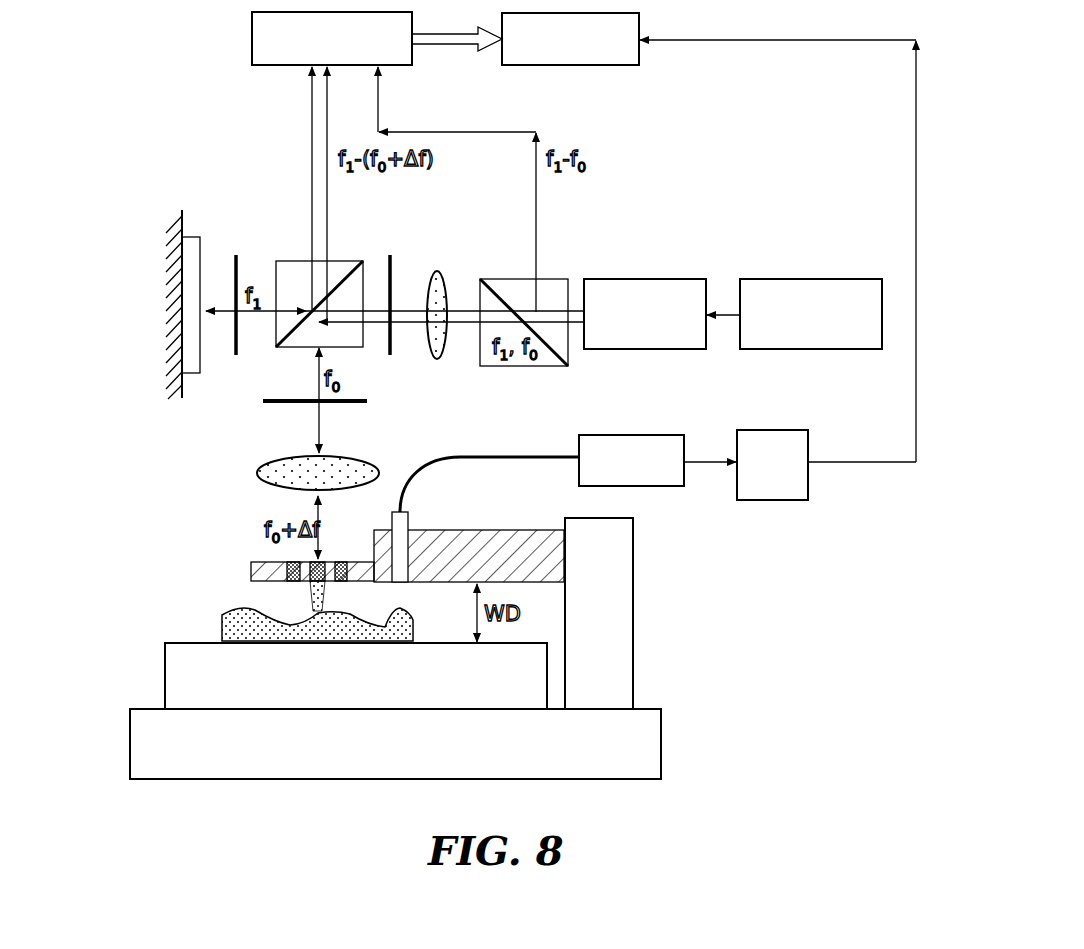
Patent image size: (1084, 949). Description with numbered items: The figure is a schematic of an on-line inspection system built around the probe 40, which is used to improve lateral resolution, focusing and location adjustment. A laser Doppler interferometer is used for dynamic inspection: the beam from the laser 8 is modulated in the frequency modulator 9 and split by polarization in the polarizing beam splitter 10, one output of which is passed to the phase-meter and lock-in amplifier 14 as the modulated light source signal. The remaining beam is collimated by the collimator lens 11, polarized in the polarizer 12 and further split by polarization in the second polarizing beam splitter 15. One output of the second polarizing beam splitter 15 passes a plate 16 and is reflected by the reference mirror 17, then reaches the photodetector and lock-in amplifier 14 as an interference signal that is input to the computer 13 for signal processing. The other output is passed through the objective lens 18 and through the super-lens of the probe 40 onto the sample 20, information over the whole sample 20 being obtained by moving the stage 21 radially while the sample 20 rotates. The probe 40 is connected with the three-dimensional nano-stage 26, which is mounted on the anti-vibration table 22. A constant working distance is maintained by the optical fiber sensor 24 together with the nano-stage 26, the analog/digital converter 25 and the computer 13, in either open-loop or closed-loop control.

The laser 8 is at (812, 283).
The frequency modulator 9 is at (644, 283).
The polarizing beam splitter 10 is at (552, 280).
The collimator lens 11 is at (440, 272).
The polarizer 12 is at (390, 255).
The computer 13 is at (572, 66).
The photodetector and lock-in amplifier 14 is at (283, 66).
The second polarizing beam splitter 15 is at (295, 263).
The optical plate 16 is at (236, 255).
The mirror 17 is at (193, 374).
The objective lens 18 is at (258, 475).
The sample 20 is at (222, 632).
The stage 21 is at (165, 672).
The anti-vibration table 22 is at (130, 740).
The optical fiber sensor 24 is at (655, 486).
The analog/digital converter 25 is at (773, 500).
The three-dimensional nano-stage 26 is at (633, 620).
The probe 40 is at (251, 570).